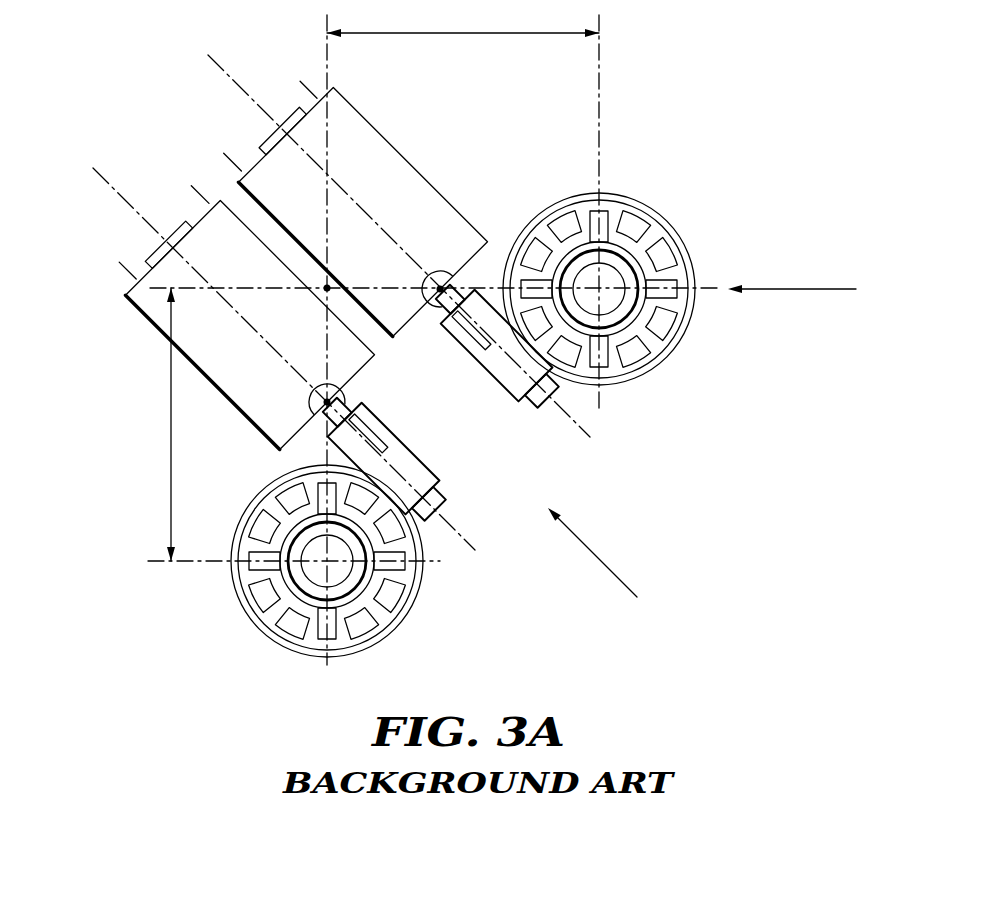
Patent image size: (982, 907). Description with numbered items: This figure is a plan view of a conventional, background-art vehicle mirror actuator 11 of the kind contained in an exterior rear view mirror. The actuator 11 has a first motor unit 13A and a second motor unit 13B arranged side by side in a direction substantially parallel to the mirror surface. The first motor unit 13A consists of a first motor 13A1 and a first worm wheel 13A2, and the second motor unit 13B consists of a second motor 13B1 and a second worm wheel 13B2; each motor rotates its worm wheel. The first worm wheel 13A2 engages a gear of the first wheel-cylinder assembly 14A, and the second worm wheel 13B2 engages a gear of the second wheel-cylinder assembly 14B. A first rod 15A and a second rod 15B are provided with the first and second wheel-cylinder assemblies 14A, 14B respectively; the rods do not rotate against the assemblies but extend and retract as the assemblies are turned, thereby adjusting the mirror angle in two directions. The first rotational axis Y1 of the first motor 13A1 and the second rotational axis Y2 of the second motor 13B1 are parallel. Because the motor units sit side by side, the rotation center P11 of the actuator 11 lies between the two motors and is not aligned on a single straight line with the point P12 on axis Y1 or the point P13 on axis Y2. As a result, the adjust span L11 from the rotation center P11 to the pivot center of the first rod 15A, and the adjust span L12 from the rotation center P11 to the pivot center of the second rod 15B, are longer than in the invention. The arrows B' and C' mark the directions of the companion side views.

The vehicle mirror actuator 11 is at (175, 141).
The first motor unit 13A is at (144, 393).
The first motor 13A1 is at (190, 347).
The first worm wheel 13A2 is at (345, 453).
The second motor unit 13B is at (541, 106).
The second motor 13B1 is at (440, 193).
The second worm wheel 13B2 is at (488, 303).
The first wheel-cylinder assembly 14A is at (233, 593).
The second wheel-cylinder assembly 14B is at (694, 312).
The first rod 15A is at (315, 575).
The second rod 15B is at (610, 303).
The rotation center P11 is at (330, 286).
The point on the first rotational axis P12 is at (331, 401).
The point on the second rotational axis P13 is at (439, 292).
The first rotational axis Y1 is at (287, 357).
The second rotational axis Y2 is at (406, 246).
The adjust span L11 is at (168, 474).
The adjust span L12 is at (463, 18).
The viewing direction B' is at (605, 562).
The viewing direction C' is at (808, 292).